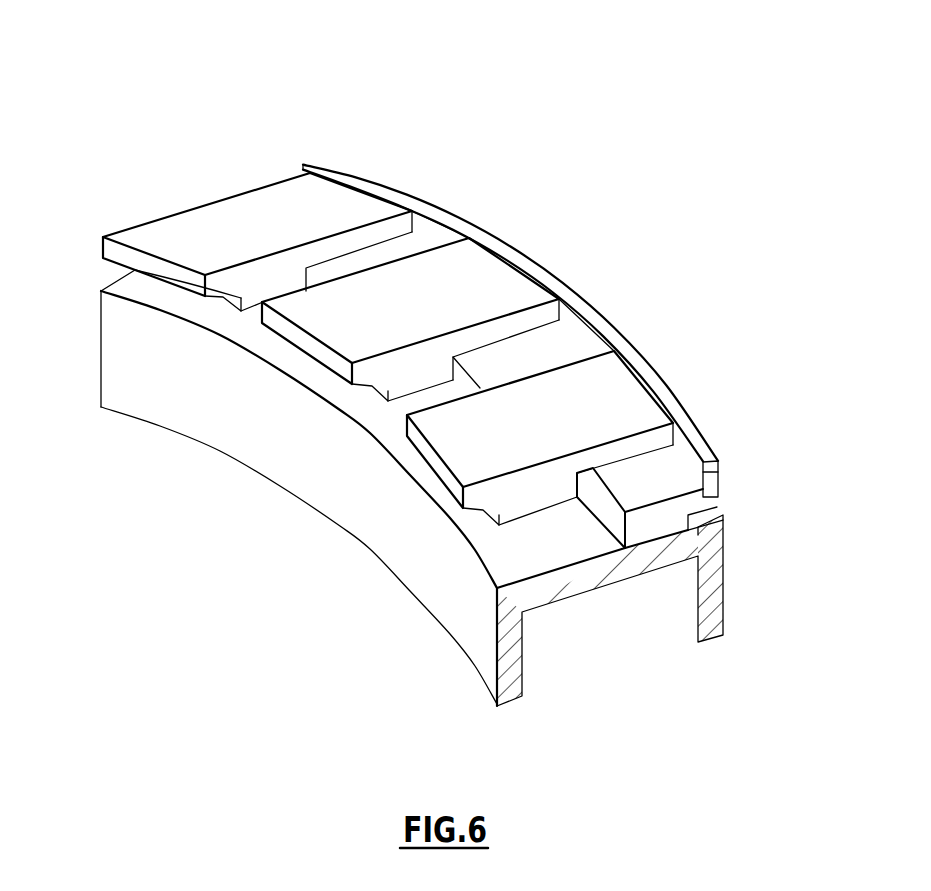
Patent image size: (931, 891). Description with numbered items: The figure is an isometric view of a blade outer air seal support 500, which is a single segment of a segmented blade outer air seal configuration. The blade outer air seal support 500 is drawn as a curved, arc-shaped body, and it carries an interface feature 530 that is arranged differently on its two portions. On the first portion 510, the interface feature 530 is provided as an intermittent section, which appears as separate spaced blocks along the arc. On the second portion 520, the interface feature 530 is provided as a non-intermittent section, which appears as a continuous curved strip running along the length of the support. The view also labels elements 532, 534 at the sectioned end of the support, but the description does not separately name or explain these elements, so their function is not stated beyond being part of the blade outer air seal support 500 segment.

The blade outer air seal support 500 is at (572, 127).
The first portion 510 is at (283, 195).
The second portion 520 is at (431, 200).
The interface feature 530 is at (668, 470).
The rail 532 is at (634, 550).
The rail 534 is at (634, 550).